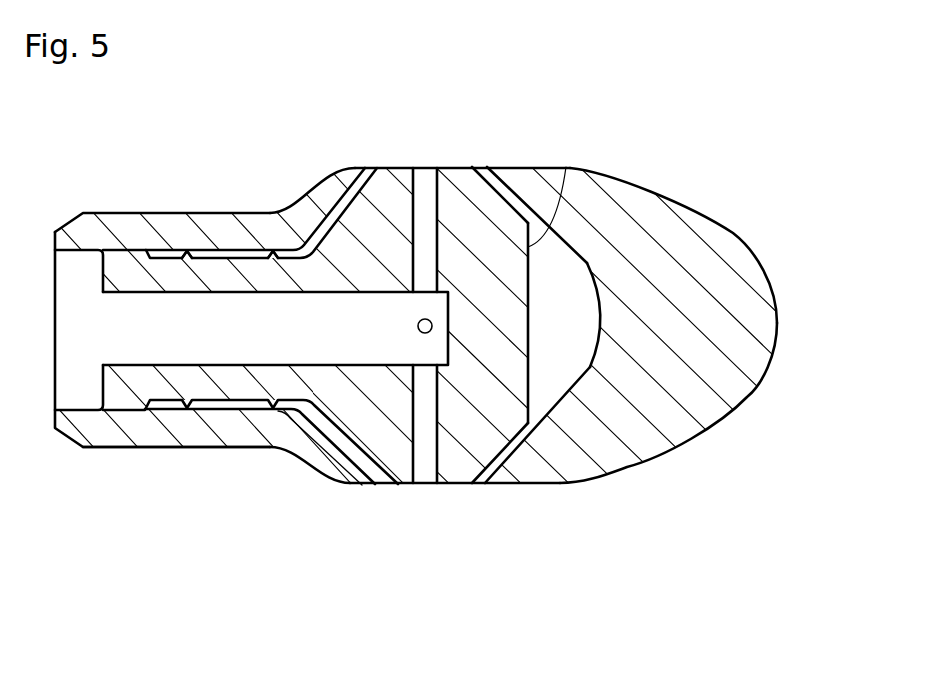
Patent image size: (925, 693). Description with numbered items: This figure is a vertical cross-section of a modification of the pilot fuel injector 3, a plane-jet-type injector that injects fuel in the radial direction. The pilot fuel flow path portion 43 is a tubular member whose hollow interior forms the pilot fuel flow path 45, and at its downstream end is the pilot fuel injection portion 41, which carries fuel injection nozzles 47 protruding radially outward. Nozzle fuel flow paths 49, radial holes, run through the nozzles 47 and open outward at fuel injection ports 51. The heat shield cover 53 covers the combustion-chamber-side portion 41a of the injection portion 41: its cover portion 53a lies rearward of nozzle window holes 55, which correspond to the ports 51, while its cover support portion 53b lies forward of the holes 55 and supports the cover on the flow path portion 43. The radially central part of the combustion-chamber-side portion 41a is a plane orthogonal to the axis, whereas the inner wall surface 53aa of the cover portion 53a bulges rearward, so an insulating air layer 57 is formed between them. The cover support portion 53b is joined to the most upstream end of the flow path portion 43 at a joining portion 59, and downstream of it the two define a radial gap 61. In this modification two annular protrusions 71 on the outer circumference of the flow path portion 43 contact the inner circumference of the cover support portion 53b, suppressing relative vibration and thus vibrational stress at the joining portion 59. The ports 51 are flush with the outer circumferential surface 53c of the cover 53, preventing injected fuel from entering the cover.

The pilot fuel injector 3 is at (667, 193).
The pilot fuel injection portion 41 is at (367, 410).
The combustion-chamber-side portion 41a is at (545, 240).
The pilot fuel flow path portion 43 is at (173, 380).
The pilot fuel flow path 45 is at (263, 345).
The fuel injection nozzles 47 is at (458, 462).
The nozzle fuel flow paths 49 is at (420, 213).
The fuel injection ports 51 is at (434, 168).
The heat shield cover 53 is at (770, 362).
The cover portion 53a is at (722, 251).
The inner wall surface 53aa is at (596, 347).
The cover support portion 53b is at (207, 437).
The outer circumferential surface 53c is at (357, 168).
The nozzle window holes 55 is at (482, 170).
The air layer 57 is at (575, 328).
The joining portion 59 is at (112, 250).
The radial gap 61 is at (160, 253).
The annular protrusions 71 is at (273, 250).